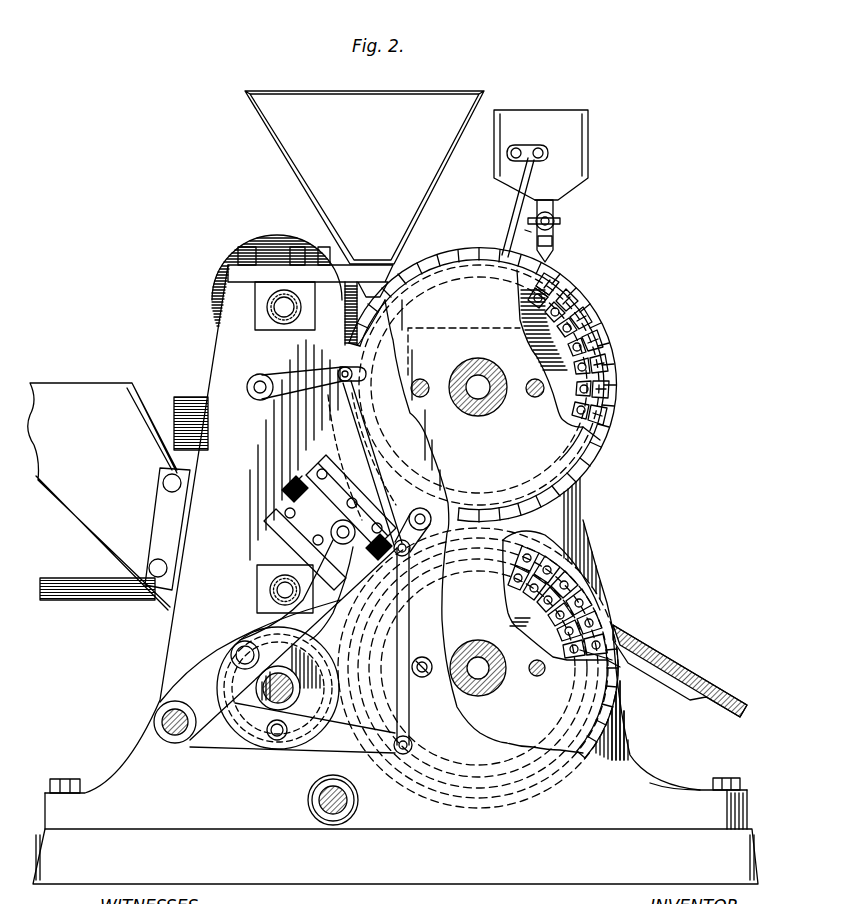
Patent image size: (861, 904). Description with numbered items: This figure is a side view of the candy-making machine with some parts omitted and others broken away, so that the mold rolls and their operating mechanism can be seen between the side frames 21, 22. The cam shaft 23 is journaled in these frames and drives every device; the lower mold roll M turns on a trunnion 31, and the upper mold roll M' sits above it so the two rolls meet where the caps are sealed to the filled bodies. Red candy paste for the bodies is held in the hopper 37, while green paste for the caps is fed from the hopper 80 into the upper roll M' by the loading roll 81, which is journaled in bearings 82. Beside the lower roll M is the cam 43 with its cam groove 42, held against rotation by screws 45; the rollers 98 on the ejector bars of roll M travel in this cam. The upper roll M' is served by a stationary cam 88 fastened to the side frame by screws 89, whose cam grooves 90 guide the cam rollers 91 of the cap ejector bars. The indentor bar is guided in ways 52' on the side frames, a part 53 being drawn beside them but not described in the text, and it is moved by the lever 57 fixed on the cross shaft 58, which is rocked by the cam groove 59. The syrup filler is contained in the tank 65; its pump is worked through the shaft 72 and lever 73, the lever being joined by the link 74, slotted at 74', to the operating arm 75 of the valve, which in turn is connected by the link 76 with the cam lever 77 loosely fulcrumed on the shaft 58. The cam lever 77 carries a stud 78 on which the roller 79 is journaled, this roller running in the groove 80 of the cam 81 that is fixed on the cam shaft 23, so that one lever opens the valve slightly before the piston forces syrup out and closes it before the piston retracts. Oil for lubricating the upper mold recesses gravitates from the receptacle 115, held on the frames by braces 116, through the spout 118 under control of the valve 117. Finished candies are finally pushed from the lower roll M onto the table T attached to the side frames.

The hopper 80 is at (285, 144).
The loading roll 81 is at (268, 248).
The bearings 82 is at (262, 304).
The receptacle 115 is at (590, 163).
The braces 116 is at (520, 203).
The valve 117 is at (562, 220).
The spout 118 is at (553, 240).
The cam rollers 91 is at (565, 302).
The upper mold roll M' is at (598, 349).
The cam 88 is at (600, 445).
The cam grooves 90 is at (572, 432).
The cam groove 59 is at (422, 379).
The screws 89 is at (533, 397).
The hopper 37 is at (100, 386).
The tank 65 is at (186, 398).
The shaft 72 is at (248, 385).
The lever 73 is at (278, 382).
The slot 74' is at (368, 388).
The link 74 is at (368, 463).
The operating arm 75 is at (425, 515).
The ways 52' is at (339, 503).
The guide bar 53 is at (312, 510).
The trunnion 31 is at (478, 654).
The link 76 is at (422, 656).
The studs or screws 45 is at (424, 680).
The roller 98 is at (592, 585).
The lower mold roll M is at (580, 578).
The table T is at (686, 665).
The cam 43 is at (558, 682).
The cam groove 42 is at (606, 719).
The side frame 22 is at (612, 760).
The side frame 21 is at (656, 792).
The cross shaft 58 is at (153, 722).
The lever 57 is at (210, 672).
The cam lever 77 is at (218, 746).
The cam shaft 23 is at (275, 700).
The stud 78 is at (274, 740).
The roller 79 is at (297, 746).